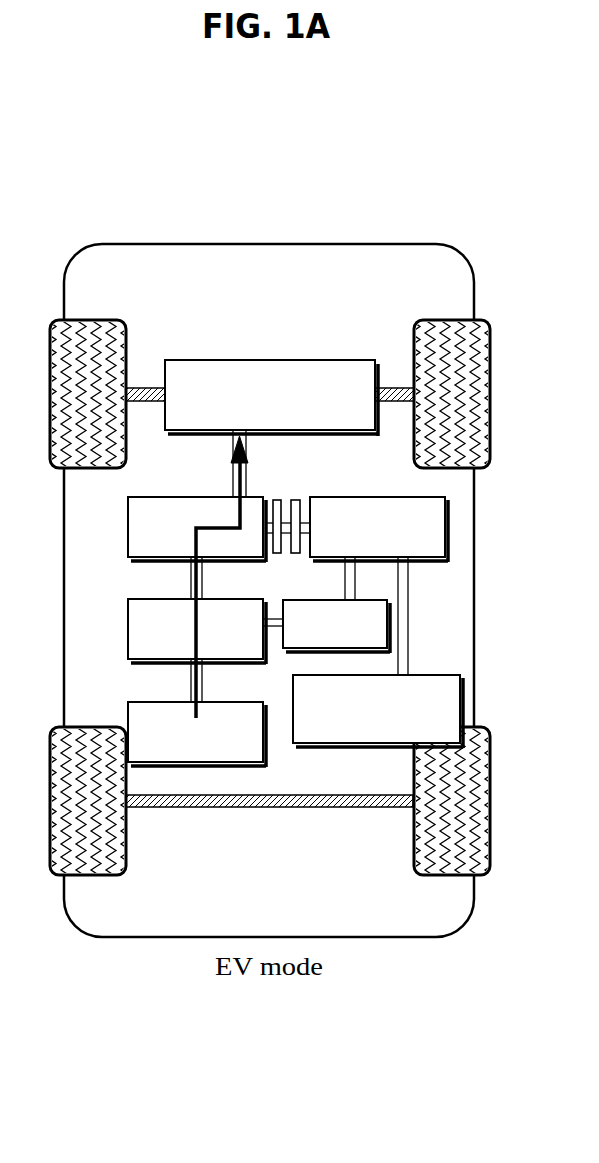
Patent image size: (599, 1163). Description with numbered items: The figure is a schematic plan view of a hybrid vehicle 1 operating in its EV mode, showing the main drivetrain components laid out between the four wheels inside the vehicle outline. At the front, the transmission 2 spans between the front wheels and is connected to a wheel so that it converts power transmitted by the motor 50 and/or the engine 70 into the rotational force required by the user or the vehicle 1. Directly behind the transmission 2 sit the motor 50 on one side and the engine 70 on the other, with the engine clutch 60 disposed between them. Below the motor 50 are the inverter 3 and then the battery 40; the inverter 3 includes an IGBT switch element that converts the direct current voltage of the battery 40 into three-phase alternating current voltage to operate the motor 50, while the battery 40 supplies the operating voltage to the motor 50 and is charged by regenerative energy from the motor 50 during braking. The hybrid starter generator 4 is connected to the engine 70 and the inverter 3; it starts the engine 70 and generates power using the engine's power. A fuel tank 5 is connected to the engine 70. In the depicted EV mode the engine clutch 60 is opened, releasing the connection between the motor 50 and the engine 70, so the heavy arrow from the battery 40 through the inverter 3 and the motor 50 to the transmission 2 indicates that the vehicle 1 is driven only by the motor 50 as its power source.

The vehicle 1 is at (115, 188).
The transmission 2 is at (303, 360).
The inverter 3 is at (128, 632).
The hybrid starter generator (HSG) 4 is at (296, 600).
The fuel tank 5 is at (445, 675).
The battery 40 is at (128, 716).
The motor 50 is at (128, 526).
The engine clutch 60 is at (296, 500).
The engine 70 is at (389, 497).